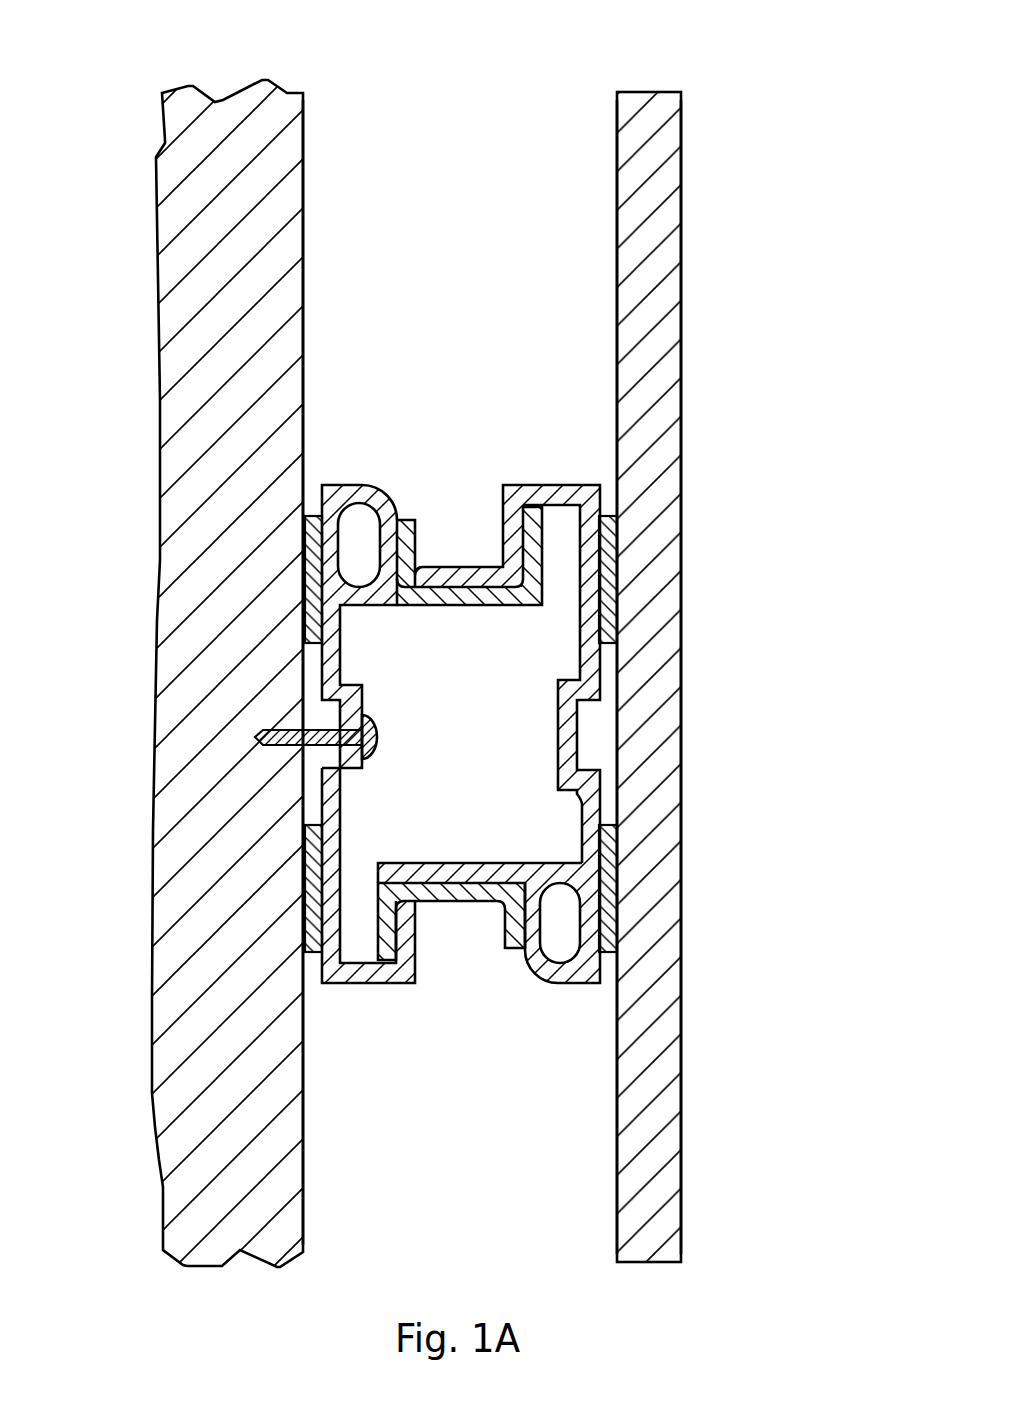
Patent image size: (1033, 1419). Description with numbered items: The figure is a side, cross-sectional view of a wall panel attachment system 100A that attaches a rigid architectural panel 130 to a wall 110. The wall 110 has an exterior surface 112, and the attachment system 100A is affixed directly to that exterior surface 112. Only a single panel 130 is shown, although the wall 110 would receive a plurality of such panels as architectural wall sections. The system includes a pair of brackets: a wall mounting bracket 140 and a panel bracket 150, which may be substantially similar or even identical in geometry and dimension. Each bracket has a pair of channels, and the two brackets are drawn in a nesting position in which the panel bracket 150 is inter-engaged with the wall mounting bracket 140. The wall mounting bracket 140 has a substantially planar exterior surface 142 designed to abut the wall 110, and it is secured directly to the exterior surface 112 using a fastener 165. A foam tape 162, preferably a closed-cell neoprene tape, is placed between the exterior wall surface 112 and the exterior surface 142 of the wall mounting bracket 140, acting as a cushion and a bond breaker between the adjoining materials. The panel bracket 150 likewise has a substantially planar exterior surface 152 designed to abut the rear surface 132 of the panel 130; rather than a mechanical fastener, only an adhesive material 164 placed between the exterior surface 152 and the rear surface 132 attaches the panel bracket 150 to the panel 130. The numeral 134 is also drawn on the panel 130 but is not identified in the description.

The wall panel attachment system 100A is at (719, 45).
The wall 110 is at (259, 373).
The exterior surface 112 is at (303, 190).
The panel 130 is at (681, 1105).
The rear surface 132 is at (617, 141).
The panel rear face 134 is at (681, 252).
The wall mounting bracket 140 is at (355, 485).
The exterior surface 142 is at (322, 805).
The panel bracket 150 is at (553, 985).
The exterior surface 152 is at (600, 663).
The foam tape 162 is at (303, 577).
The adhesive material 164 is at (617, 566).
The fastener 165 is at (378, 740).